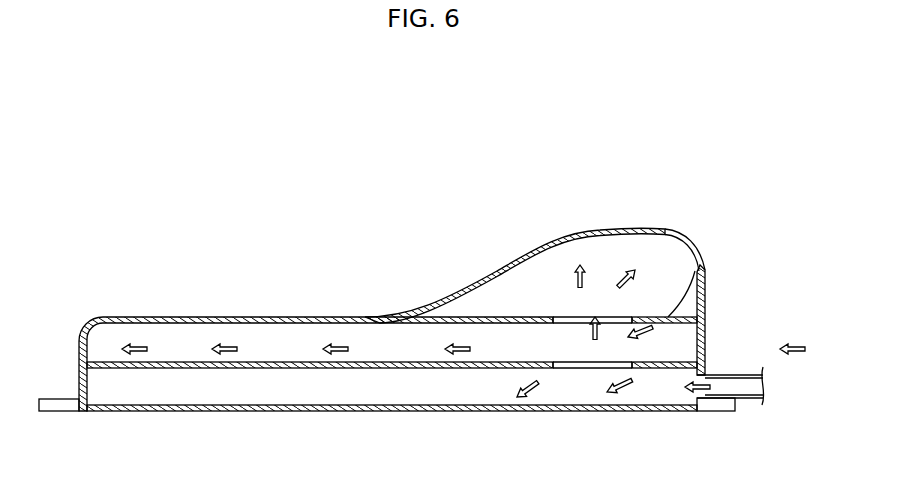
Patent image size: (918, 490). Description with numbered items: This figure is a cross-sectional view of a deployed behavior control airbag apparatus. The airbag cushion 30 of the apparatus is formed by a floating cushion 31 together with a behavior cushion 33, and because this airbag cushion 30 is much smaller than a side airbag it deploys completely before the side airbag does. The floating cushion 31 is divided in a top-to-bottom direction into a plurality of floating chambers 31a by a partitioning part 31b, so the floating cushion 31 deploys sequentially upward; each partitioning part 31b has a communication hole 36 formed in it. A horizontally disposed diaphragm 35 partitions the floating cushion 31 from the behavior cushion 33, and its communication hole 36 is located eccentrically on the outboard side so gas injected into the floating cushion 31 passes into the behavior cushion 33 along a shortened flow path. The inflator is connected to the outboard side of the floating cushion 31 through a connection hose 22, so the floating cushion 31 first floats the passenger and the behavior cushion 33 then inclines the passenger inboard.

The connection hose 22 is at (740, 377).
The airbag cushion 30 is at (498, 258).
The floating cushion 31 is at (276, 304).
The floating chambers 31a is at (380, 393).
The partitioning part 31b is at (432, 367).
The behavior cushion 33 is at (632, 230).
The diaphragm 35 is at (697, 268).
The communication hole 36 is at (568, 317).